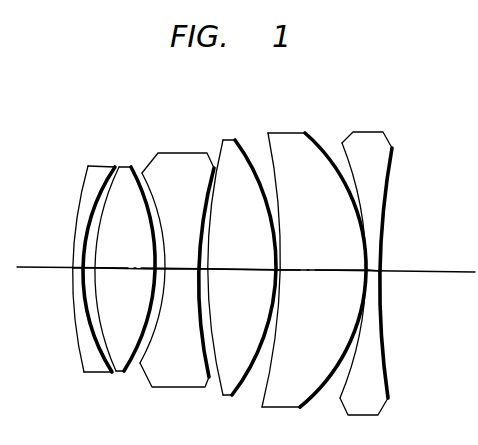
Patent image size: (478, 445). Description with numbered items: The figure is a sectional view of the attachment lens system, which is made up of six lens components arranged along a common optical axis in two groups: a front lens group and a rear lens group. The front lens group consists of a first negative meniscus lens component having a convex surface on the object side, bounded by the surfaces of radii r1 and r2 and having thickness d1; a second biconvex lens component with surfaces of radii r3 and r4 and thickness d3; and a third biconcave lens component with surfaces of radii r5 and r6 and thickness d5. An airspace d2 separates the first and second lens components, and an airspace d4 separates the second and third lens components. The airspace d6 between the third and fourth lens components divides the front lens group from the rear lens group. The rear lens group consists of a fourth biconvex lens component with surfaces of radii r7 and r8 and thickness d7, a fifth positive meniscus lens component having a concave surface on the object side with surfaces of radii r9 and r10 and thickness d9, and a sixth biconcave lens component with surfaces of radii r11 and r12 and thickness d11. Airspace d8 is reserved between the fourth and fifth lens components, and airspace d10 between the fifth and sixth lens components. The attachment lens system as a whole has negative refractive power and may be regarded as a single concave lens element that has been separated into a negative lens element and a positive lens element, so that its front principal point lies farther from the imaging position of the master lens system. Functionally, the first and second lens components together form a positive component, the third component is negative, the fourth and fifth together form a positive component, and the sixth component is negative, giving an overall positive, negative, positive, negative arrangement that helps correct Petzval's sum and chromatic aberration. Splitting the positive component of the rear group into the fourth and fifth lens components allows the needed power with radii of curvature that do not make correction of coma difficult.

The radius of curvature on the object side surface of the first lens component r1 is at (84, 185).
The radius of curvature on the image side surface of the first lens component r2 is at (101, 190).
The radius of curvature on the object side surface of the second lens component r3 is at (108, 193).
The radius of curvature on the image side surface of the second lens component r4 is at (134, 172).
The radius of curvature on the object side surface of the third lens component r5 is at (149, 185).
The radius of curvature on the image side surface of the third lens component r6 is at (210, 163).
The radius of curvature on the object side surface of the fourth lens component r7 is at (219, 165).
The radius of curvature on the image side surface of the fourth lens component r8 is at (241, 156).
The radius of curvature on the object side surface of the fifth lens component r9 is at (271, 160).
The radius of curvature on the image side surface of the fifth lens component r10 is at (309, 141).
The radius of curvature on the object side surface of the sixth lens component r11 is at (343, 150).
The radius of curvature on the image side surface of the sixth lens component r12 is at (391, 168).
The thickness of the first lens component d1 is at (74, 280).
The airspace between the first and second lens components d2 is at (91, 276).
The thickness of the second lens component d3 is at (137, 275).
The airspace between the second and third lens components d4 is at (160, 276).
The thickness of the third lens component d5 is at (183, 272).
The airspace between the third and fourth lens components d6 is at (213, 276).
The thickness of the fourth lens component d7 is at (248, 272).
The airspace between the fourth and fifth lens components d8 is at (282, 276).
The thickness of the fifth lens component d9 is at (317, 277).
The airspace between the fifth and sixth lens components d10 is at (363, 275).
The thickness of the sixth lens component d11 is at (382, 297).